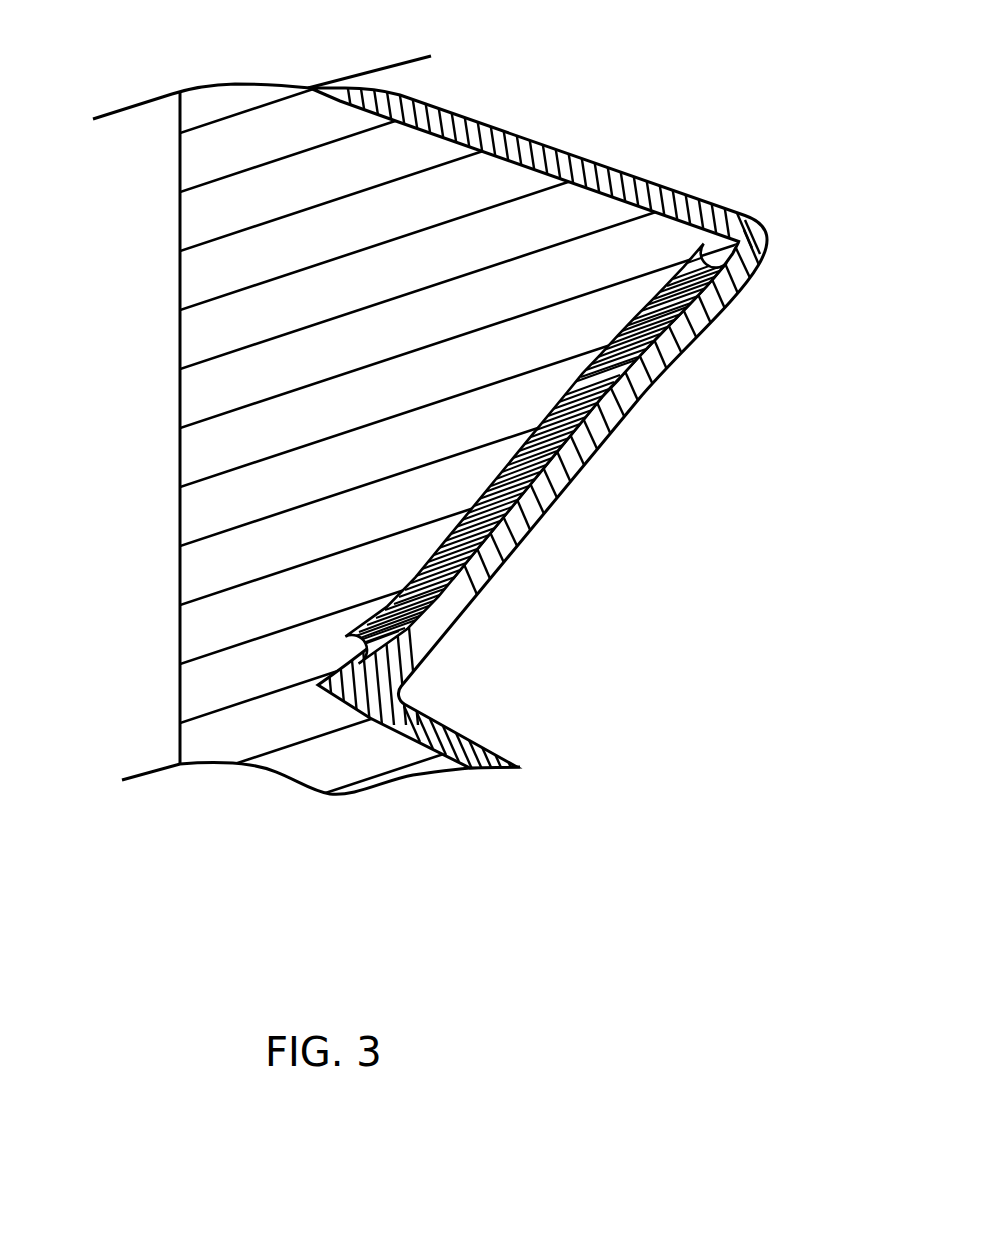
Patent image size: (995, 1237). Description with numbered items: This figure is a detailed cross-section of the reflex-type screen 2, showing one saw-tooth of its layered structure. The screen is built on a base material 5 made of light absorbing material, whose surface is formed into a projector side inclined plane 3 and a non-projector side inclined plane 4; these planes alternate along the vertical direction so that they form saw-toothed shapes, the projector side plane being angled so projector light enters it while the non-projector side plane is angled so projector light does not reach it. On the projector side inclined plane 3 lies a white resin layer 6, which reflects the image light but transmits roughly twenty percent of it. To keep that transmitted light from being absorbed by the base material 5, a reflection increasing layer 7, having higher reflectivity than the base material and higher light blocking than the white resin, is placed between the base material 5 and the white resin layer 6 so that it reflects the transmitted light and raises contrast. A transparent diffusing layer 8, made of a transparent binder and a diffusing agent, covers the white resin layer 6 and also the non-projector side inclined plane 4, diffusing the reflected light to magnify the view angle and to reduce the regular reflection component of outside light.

The reflex-type screen 2 is at (798, 64).
The projector side inclined plane 3 is at (645, 258).
The non-projector side inclined plane 4 is at (657, 221).
The base material 5 is at (197, 403).
The white resin layer 6 is at (664, 328).
The reflection increasing layer 7 is at (354, 617).
The transparent diffusing layer 8 is at (624, 176).